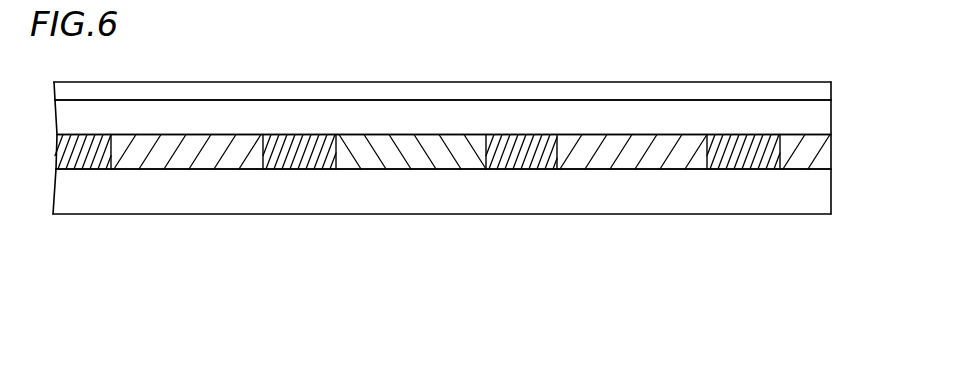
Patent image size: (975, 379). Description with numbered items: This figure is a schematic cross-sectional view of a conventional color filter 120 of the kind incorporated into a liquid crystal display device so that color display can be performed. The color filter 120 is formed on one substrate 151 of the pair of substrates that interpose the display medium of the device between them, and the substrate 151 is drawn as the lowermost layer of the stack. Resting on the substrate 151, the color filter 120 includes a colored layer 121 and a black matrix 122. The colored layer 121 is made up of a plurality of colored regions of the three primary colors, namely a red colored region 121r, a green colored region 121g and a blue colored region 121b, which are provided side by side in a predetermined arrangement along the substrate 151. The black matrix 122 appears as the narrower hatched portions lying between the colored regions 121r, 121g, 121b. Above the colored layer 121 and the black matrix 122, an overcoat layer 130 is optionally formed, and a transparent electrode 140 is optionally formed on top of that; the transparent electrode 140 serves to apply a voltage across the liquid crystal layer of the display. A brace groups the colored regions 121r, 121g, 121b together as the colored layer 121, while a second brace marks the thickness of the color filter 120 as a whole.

The color filter 120 is at (837, 133).
The colored layer 121 is at (660, 286).
The red colored region 121r is at (200, 156).
The green colored region 121g is at (430, 160).
The blue colored region 121b is at (645, 160).
The black matrix 122 is at (304, 135).
The overcoat layer 130 is at (470, 113).
The transparent electrode 140 is at (702, 92).
The substrate 151 is at (797, 195).